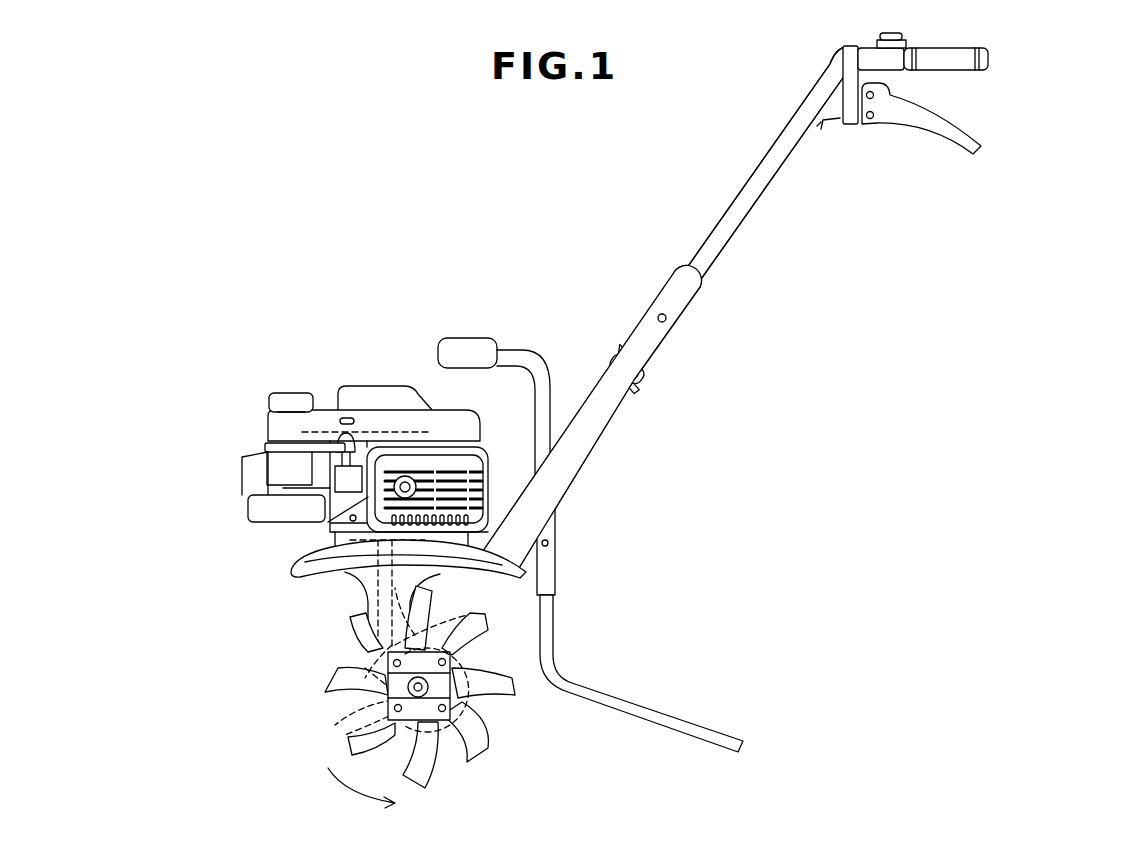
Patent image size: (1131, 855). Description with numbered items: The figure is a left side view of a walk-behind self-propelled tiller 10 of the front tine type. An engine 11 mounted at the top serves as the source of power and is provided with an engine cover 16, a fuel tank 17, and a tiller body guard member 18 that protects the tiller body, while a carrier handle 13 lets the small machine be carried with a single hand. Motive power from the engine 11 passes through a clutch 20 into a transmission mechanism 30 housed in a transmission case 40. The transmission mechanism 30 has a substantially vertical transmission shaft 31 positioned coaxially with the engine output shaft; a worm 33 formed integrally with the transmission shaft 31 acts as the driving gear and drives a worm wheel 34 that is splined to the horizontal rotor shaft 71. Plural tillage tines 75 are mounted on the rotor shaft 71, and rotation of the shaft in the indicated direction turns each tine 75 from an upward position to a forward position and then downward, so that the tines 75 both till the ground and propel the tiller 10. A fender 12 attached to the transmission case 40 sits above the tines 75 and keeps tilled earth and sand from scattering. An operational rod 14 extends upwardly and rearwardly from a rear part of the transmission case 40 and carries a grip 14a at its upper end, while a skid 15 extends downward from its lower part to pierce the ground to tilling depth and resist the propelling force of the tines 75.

The tiller 10 is at (286, 108).
The engine 11 is at (308, 398).
The fender 12 is at (522, 563).
The carrier handle 13 is at (484, 342).
The operational rod 14 is at (740, 222).
The grip 14a is at (988, 58).
The skid 15 is at (660, 708).
The engine cover 16 is at (548, 384).
The fuel tank 17 is at (276, 426).
The tiller body guard member 18 is at (242, 463).
The clutch 20 is at (312, 552).
The transmission mechanism 30 is at (389, 703).
The transmission shaft 31 is at (362, 572).
The worm 33 is at (335, 683).
The worm wheel 34 is at (342, 720).
The transmission case 40 is at (362, 593).
The rotor shaft 71 is at (450, 708).
The tillage tines 75 is at (492, 623).